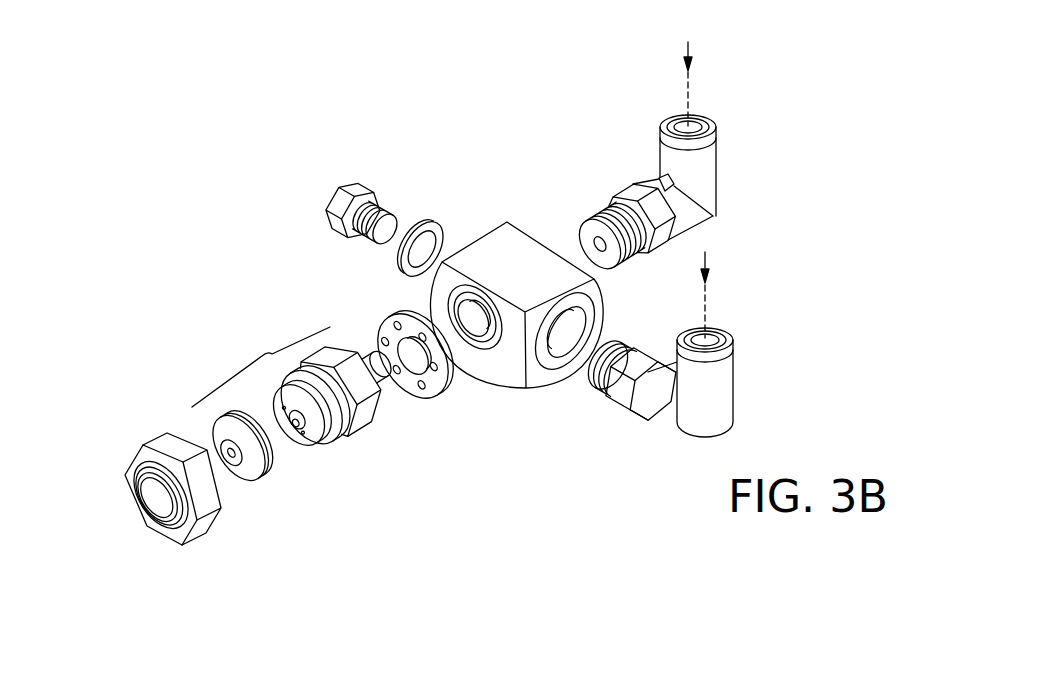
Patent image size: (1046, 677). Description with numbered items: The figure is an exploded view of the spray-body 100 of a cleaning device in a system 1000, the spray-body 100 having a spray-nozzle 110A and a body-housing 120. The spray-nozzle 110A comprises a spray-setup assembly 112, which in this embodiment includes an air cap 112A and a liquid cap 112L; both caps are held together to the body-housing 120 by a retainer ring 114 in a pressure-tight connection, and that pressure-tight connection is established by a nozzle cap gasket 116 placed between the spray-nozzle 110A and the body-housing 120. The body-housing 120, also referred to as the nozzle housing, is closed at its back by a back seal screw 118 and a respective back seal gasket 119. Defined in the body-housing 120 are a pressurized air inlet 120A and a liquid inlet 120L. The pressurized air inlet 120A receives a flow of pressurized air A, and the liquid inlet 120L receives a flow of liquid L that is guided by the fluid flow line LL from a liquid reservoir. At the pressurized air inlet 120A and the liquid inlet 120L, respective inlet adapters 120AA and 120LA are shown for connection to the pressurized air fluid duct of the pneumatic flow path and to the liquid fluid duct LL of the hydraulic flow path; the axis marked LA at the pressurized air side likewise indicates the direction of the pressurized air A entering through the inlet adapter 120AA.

The system 1000 is at (139, 129).
The spray-body 100 is at (260, 180).
The spray-nozzle 110A is at (477, 532).
The spray-setup assembly 112 is at (307, 451).
The air cap 112A is at (276, 480).
The liquid cap 112L is at (374, 433).
The retainer ring 114 is at (125, 474).
The nozzle cap gasket 116 is at (433, 400).
The back seal screw 118 is at (368, 176).
The back seal gasket 119 is at (432, 220).
The body-housing 120 is at (518, 247).
The liquid inlet 120L is at (588, 217).
The pressurized air inlet 120A is at (567, 345).
The inlet adapter 120LA is at (707, 178).
The inlet adapter 120AA is at (718, 393).
The liquid L is at (700, 47).
The fluid flow line for liquid LL is at (693, 96).
The pressurized air A is at (708, 262).
The axis LA is at (706, 308).